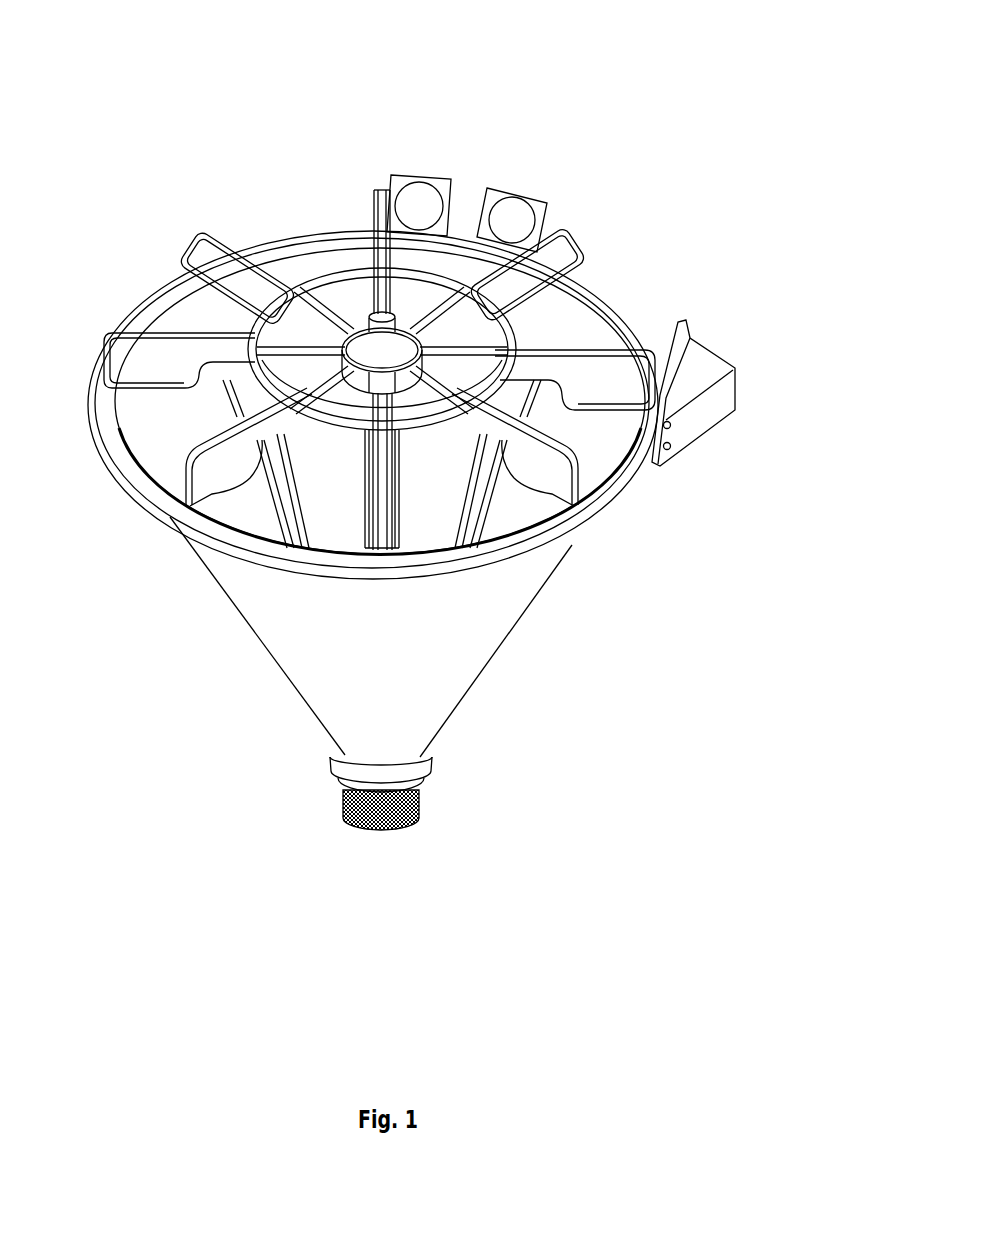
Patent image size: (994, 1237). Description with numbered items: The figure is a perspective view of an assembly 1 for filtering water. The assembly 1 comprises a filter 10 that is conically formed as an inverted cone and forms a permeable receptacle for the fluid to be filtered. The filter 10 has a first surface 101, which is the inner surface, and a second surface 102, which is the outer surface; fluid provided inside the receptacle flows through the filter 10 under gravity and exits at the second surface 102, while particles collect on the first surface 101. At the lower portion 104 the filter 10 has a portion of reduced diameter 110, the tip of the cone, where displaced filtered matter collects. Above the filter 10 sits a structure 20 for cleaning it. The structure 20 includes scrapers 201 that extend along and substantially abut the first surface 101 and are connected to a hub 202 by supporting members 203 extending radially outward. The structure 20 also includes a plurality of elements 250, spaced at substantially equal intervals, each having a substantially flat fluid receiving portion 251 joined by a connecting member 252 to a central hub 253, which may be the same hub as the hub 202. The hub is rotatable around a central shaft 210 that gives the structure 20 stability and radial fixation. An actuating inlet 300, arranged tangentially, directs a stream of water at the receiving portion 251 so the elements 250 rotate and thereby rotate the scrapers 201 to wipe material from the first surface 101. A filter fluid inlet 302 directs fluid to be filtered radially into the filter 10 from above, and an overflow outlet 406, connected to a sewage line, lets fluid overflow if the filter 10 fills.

The assembly 1 is at (447, 125).
The filter 10 is at (470, 707).
The first surface 101 is at (184, 446).
The second surface 102 is at (400, 675).
The lower portion 104 is at (392, 762).
The portion of reduced diameter 110 is at (347, 767).
The structure 20 is at (418, 273).
The scraper 201 is at (205, 310).
The hub 202 is at (400, 402).
The supporting member 203 is at (258, 428).
The central shaft 210 is at (375, 316).
The element 250 is at (595, 380).
The fluid receiving portion 251 is at (210, 273).
The connecting member 252 is at (533, 363).
The central hub 253 is at (357, 390).
The actuating inlet 300 is at (698, 415).
The filter fluid inlet 302 is at (518, 220).
The overflow outlet 406 is at (415, 200).